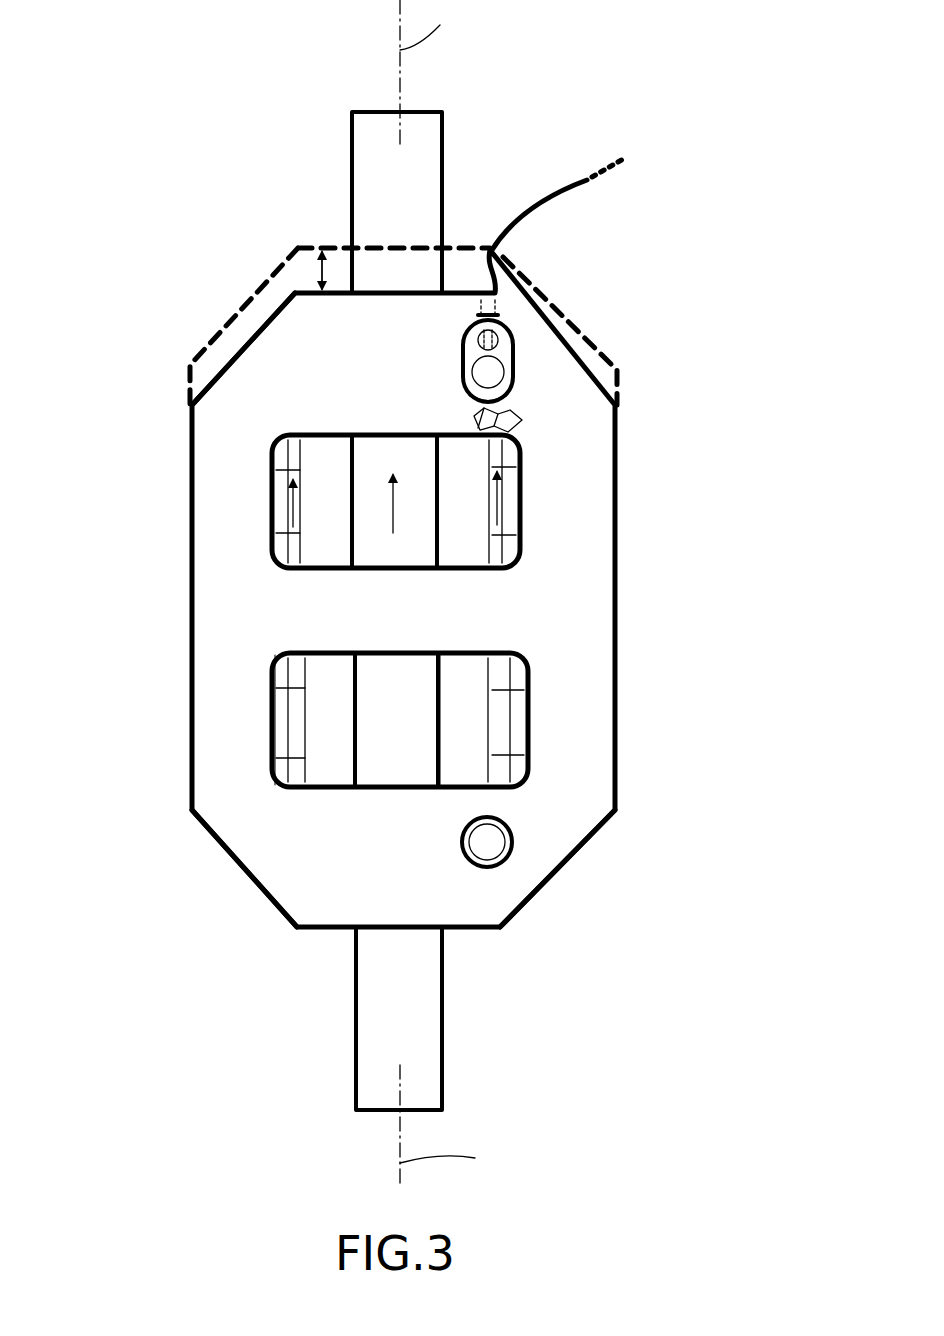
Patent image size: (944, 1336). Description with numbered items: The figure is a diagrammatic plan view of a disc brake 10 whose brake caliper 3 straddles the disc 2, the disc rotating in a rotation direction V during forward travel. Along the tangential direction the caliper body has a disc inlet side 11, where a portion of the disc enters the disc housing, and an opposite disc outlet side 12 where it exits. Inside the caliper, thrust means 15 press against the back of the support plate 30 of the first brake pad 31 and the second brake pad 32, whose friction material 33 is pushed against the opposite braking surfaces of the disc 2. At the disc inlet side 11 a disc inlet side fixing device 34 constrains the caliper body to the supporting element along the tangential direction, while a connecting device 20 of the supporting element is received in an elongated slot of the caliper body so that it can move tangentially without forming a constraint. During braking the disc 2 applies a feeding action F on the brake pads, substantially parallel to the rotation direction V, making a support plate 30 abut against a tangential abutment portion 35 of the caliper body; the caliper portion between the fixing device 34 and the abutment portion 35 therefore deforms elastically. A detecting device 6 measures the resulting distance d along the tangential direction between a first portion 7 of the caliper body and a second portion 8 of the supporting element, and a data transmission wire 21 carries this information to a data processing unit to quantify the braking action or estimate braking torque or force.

The disc brake 10 is at (200, 180).
The disc 2 is at (425, 155).
The brake caliper 3 is at (317, 902).
The disc inlet side 11 is at (352, 905).
The disc outlet side 12 is at (285, 355).
The connecting device 20 is at (465, 362).
The data transmission wire 21 is at (545, 190).
The detecting device 6 is at (505, 328).
The first portion 7 is at (512, 358).
The second portion 8 is at (515, 393).
The tangential abutment portion 35 is at (525, 418).
The thrust means 15 is at (280, 518).
The support plate 30 is at (282, 552).
The first brake pad 31 is at (478, 740).
The second brake pad 32 is at (307, 760).
The friction material 33 is at (335, 770).
The disc inlet side fixing device 34 is at (495, 868).
The distance d is at (315, 265).
The rotation direction V is at (393, 468).
The feeding action F is at (292, 470).